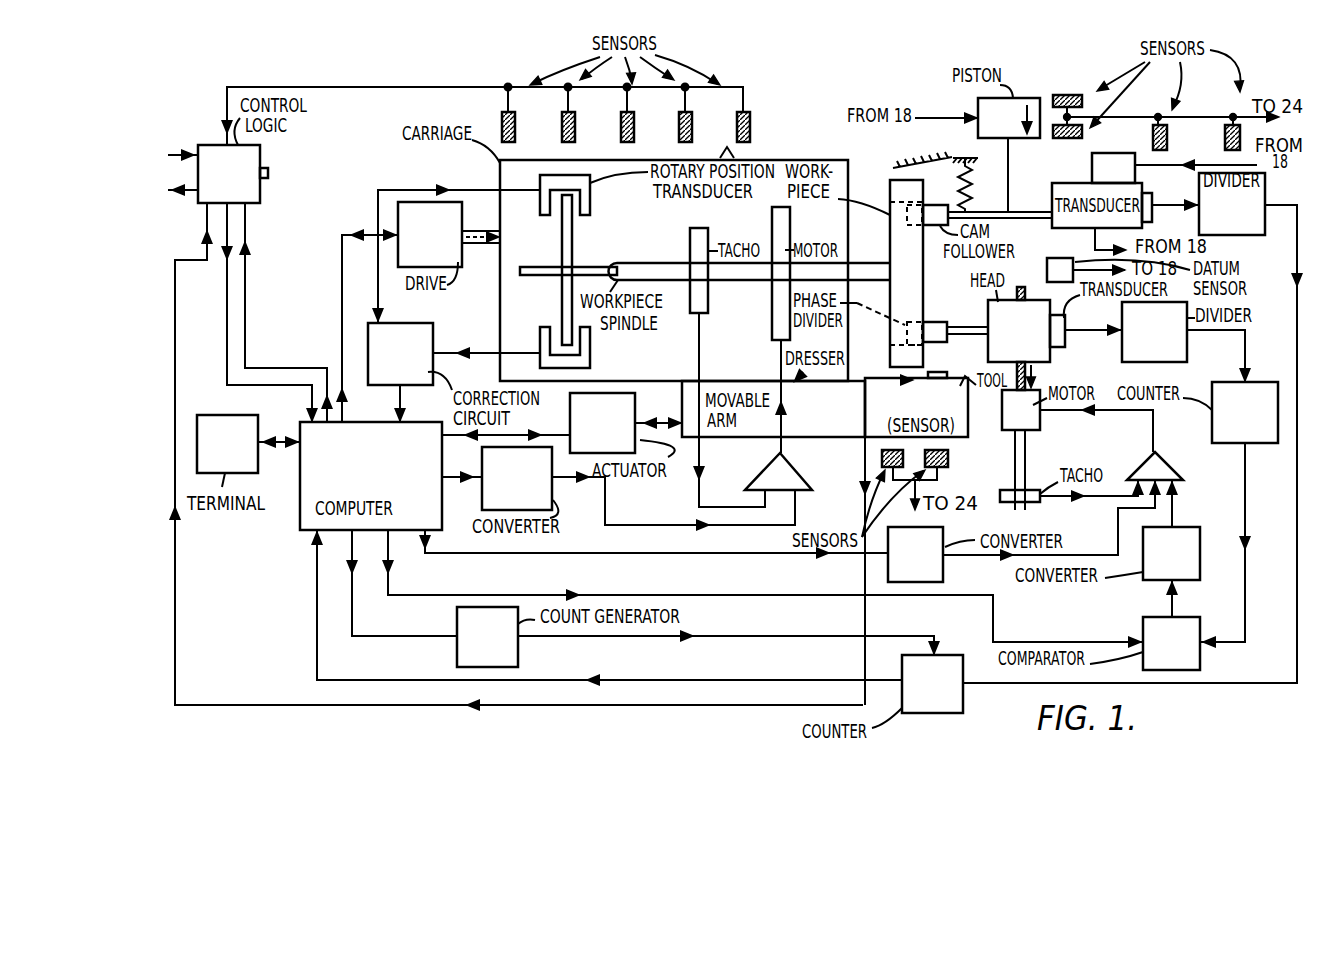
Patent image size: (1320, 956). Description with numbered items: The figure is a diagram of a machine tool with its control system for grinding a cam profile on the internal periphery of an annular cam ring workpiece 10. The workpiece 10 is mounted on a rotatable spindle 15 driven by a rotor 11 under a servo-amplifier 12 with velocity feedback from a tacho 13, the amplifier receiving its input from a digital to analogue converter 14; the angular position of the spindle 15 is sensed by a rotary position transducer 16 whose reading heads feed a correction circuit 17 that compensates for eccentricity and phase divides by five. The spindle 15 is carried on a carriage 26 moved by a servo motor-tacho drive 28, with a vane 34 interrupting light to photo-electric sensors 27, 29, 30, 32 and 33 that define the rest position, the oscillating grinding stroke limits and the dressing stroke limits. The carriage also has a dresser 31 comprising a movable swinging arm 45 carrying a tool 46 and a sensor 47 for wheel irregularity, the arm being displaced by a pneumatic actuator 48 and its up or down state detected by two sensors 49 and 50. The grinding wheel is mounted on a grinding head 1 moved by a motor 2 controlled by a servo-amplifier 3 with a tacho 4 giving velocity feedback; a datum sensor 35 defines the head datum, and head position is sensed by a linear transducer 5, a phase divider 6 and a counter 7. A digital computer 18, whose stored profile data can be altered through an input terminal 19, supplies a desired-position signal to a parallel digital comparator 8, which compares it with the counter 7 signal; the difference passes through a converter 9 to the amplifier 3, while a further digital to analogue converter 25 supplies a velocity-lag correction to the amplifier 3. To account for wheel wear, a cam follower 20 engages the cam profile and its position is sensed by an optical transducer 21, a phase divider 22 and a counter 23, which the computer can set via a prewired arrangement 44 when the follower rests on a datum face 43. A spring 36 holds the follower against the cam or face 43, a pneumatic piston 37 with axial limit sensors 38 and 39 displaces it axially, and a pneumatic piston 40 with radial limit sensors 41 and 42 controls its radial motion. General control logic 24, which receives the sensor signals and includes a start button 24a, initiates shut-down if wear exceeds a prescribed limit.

The grinding head 1 is at (1010, 346).
The motor 2 is at (1012, 423).
The servo-amplifier 3 is at (1155, 468).
The tacho 4 is at (1035, 494).
The linear transducer 5 is at (1058, 347).
The phase divider 6 is at (1145, 345).
The counter 7 is at (1236, 426).
The parallel digital comparator 8 is at (1163, 656).
The converter 9 is at (1163, 566).
The cam ring workpiece 10 is at (923, 274).
The rotor 11 is at (790, 236).
The servo-amplifier 12 is at (778, 473).
The tacho 13 is at (708, 235).
The digital to analogue converter 14 is at (502, 491).
The rotatable spindle 15 is at (648, 268).
The rotary position transducer 16 is at (590, 195).
The correction circuit 17 is at (385, 367).
The digital computer 18 is at (371, 476).
The input terminal 19 is at (212, 457).
The cam follower 20 is at (923, 225).
The optical transducer 21 is at (1148, 202).
The phase divider 22 is at (1213, 227).
The counter 23 is at (917, 697).
The general control logic 24 is at (214, 190).
The start button 24a is at (268, 173).
The digital to analogue converter 25 is at (900, 567).
The carriage 26 is at (500, 178).
The photo-electric sensor 27 is at (502, 130).
The servo motor-tacho drive 28 is at (415, 249).
The photo-electric sensor 29 is at (679, 128).
The photo-electric sensor 30 is at (737, 128).
The dresser 31 is at (757, 378).
The photo-electric sensor 32 is at (562, 128).
The photo-electric sensor 33 is at (621, 128).
The vane 34 is at (734, 155).
The datum sensor 35 is at (1062, 262).
The spring 36 is at (972, 177).
The pneumatic piston 37 is at (1099, 181).
The photo-electric axial limit sensor 38 is at (1170, 125).
The photo-electric axial limit sensor 39 is at (1230, 126).
The pneumatic piston 40 is at (986, 132).
The radial limit photo-electric sensor 41 is at (1067, 95).
The radial limit photo-electric sensor 42 is at (1062, 138).
The datum face 43 is at (893, 166).
The prewired arrangement 44 is at (472, 650).
The movable swinging arm 45 is at (806, 423).
The tool 46 is at (958, 372).
The sensor 47 is at (930, 378).
The pneumatic actuator 48 is at (587, 436).
The sensor 49 is at (882, 457).
The sensor 50 is at (948, 458).